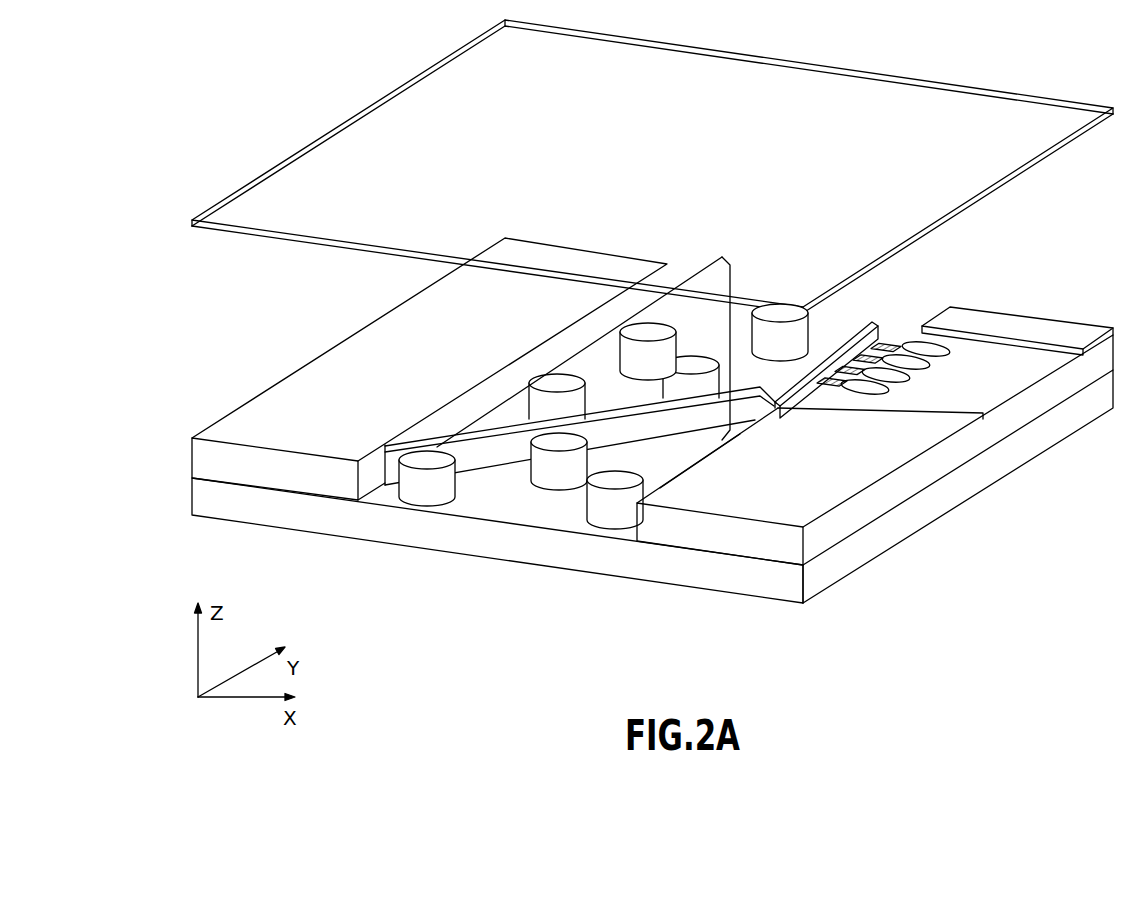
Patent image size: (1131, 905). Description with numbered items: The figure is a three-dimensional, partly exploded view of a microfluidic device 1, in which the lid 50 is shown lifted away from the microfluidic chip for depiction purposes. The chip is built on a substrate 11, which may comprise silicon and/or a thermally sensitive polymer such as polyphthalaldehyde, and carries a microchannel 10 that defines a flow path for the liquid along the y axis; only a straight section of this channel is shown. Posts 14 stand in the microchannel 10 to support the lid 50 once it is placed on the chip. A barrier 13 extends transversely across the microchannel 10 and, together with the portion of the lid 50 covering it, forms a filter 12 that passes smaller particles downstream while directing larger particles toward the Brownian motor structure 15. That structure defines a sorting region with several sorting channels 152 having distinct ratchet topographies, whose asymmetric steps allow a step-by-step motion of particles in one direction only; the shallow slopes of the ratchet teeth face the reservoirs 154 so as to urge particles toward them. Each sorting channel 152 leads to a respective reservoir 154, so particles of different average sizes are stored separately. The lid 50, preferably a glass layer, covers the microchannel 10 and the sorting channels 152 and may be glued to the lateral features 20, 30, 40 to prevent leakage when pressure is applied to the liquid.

The microfluidic device 1 is at (573, 612).
The microchannel 10 is at (528, 512).
The substrate 11 is at (335, 530).
The filter 12 is at (735, 352).
The barrier 13 is at (498, 450).
The posts 14 is at (640, 475).
The Brownian motor structure 15 is at (905, 319).
The sorting channels 152 is at (843, 372).
The reservoirs 154 is at (875, 390).
The lateral feature 20 is at (358, 365).
The lateral feature 30 is at (1007, 323).
The lateral feature 40 is at (852, 473).
The lid 50 is at (857, 92).